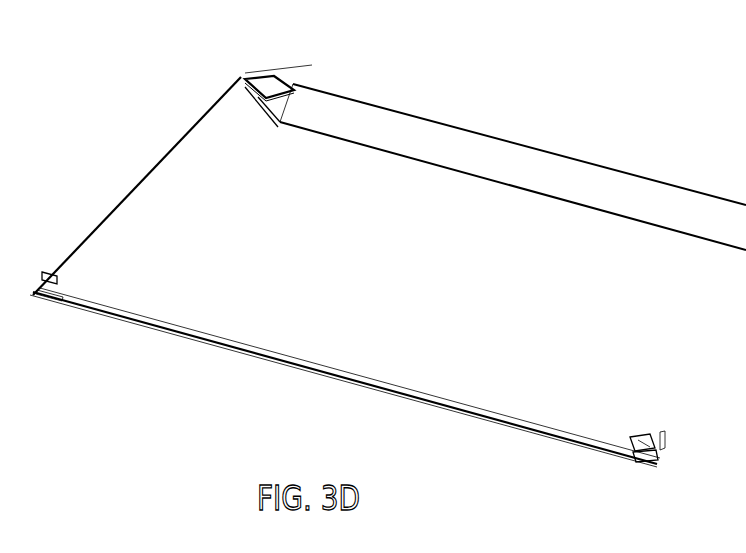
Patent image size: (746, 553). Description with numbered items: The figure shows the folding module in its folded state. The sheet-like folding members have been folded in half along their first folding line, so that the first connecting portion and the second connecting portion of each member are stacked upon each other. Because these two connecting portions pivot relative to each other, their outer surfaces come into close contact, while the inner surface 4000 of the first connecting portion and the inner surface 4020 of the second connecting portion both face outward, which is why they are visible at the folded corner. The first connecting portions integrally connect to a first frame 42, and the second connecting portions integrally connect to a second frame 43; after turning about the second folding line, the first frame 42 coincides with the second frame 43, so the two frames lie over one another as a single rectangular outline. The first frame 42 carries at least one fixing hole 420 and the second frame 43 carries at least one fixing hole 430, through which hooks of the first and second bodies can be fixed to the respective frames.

The inner surface 4000 is at (272, 82).
The inner surface 4020 is at (259, 96).
The first frame 42 is at (160, 315).
The second frame 43 is at (100, 313).
The fixing hole 420 is at (637, 448).
The fixing hole 430 is at (640, 460).